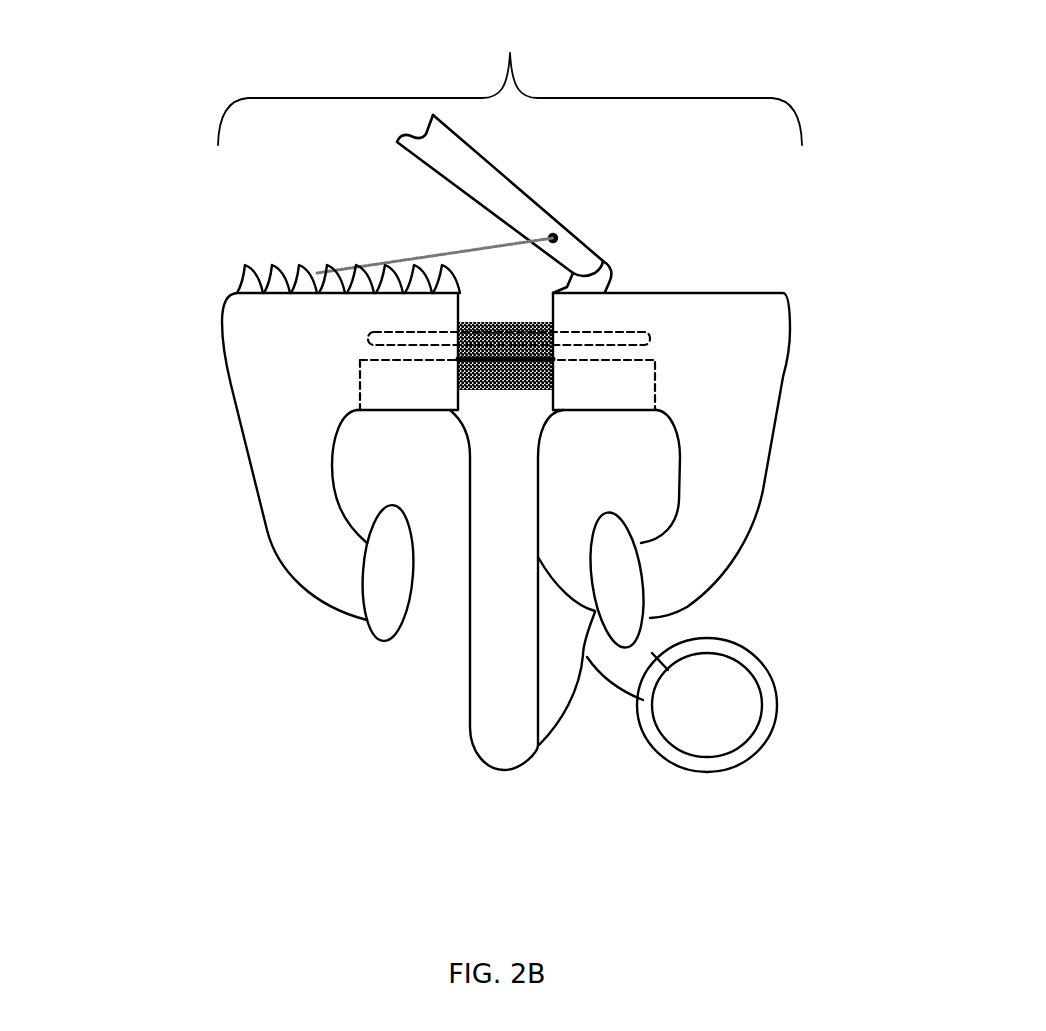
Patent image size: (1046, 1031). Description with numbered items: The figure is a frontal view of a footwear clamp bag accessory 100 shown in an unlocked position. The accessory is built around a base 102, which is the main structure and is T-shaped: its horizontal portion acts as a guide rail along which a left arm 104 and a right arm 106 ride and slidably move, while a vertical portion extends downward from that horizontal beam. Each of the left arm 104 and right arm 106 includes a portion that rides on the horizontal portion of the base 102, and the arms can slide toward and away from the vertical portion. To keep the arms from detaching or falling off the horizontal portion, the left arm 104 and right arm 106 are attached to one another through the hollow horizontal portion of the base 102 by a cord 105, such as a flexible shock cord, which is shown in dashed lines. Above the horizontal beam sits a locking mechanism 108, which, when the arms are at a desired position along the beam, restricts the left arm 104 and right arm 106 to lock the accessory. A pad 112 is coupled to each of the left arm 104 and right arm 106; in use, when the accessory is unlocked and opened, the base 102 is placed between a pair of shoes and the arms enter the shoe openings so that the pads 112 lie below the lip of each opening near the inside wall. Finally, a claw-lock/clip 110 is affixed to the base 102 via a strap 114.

The footwear clamp bag accessory 100 is at (166, 258).
The base 102 is at (528, 798).
The left arm 104 is at (229, 430).
The cord 105 is at (638, 321).
The right arm 106 is at (797, 431).
The locking mechanism 108 is at (510, 153).
The claw-lock/clip 110 is at (788, 715).
The pad 112 is at (592, 591).
The strap 114 is at (653, 640).